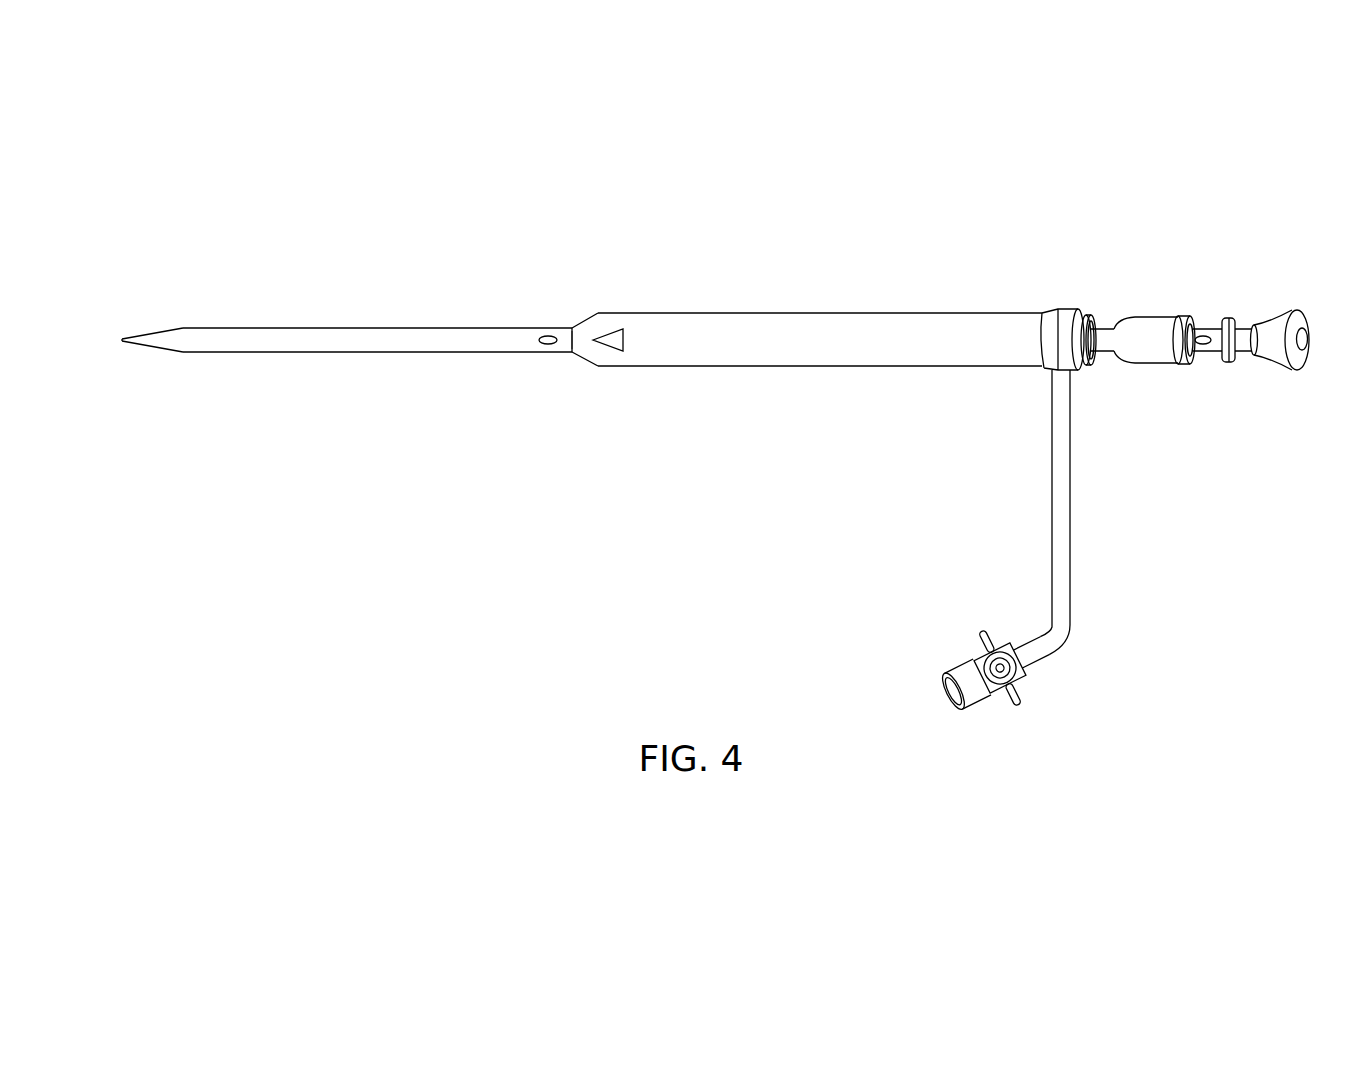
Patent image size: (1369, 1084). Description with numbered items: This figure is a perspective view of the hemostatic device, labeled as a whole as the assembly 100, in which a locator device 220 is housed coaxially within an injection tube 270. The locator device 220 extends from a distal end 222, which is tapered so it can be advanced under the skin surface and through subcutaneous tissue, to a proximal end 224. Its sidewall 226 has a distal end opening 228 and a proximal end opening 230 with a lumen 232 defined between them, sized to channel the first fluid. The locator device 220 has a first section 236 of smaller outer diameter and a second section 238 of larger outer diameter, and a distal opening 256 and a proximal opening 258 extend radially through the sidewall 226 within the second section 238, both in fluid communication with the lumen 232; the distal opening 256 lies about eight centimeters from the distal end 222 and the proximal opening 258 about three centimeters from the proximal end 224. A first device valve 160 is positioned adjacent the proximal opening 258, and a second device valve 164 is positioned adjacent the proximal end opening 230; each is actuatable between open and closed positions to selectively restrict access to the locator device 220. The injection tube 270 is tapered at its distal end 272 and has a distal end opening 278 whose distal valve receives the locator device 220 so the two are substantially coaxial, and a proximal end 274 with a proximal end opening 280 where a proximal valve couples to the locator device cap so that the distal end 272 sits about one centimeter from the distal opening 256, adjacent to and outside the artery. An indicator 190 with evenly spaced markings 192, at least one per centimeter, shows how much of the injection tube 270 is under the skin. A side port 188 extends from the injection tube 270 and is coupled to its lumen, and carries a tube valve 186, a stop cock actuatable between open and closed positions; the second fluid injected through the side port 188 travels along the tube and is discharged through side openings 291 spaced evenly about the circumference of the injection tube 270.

The surgical instrument assembly 100 is at (455, 545).
The locator device 220 is at (480, 366).
The distal end 222 is at (131, 349).
The sidewall 226 is at (278, 328).
The distal end opening 228 is at (122, 338).
The first section 236 is at (148, 352).
The second section 238 is at (344, 366).
The lumen 232 is at (455, 332).
The distal opening 256 is at (548, 335).
The injection tube 270 is at (735, 312).
The distal end 272 is at (584, 369).
The distal end opening 278 is at (569, 349).
The side openings 291 is at (627, 328).
The indicator 190 is at (752, 376).
The markings 192 is at (906, 352).
The proximal end 274 is at (1094, 309).
The proximal end opening 280 is at (1081, 368).
The first device valve 160 is at (1165, 330).
The proximal opening 258 is at (1203, 346).
The proximal end 224 is at (1286, 356).
The second device valve 164 is at (1283, 320).
The proximal end opening 230 is at (1306, 335).
The tube valve 186 is at (1019, 701).
The side port 188 is at (940, 708).